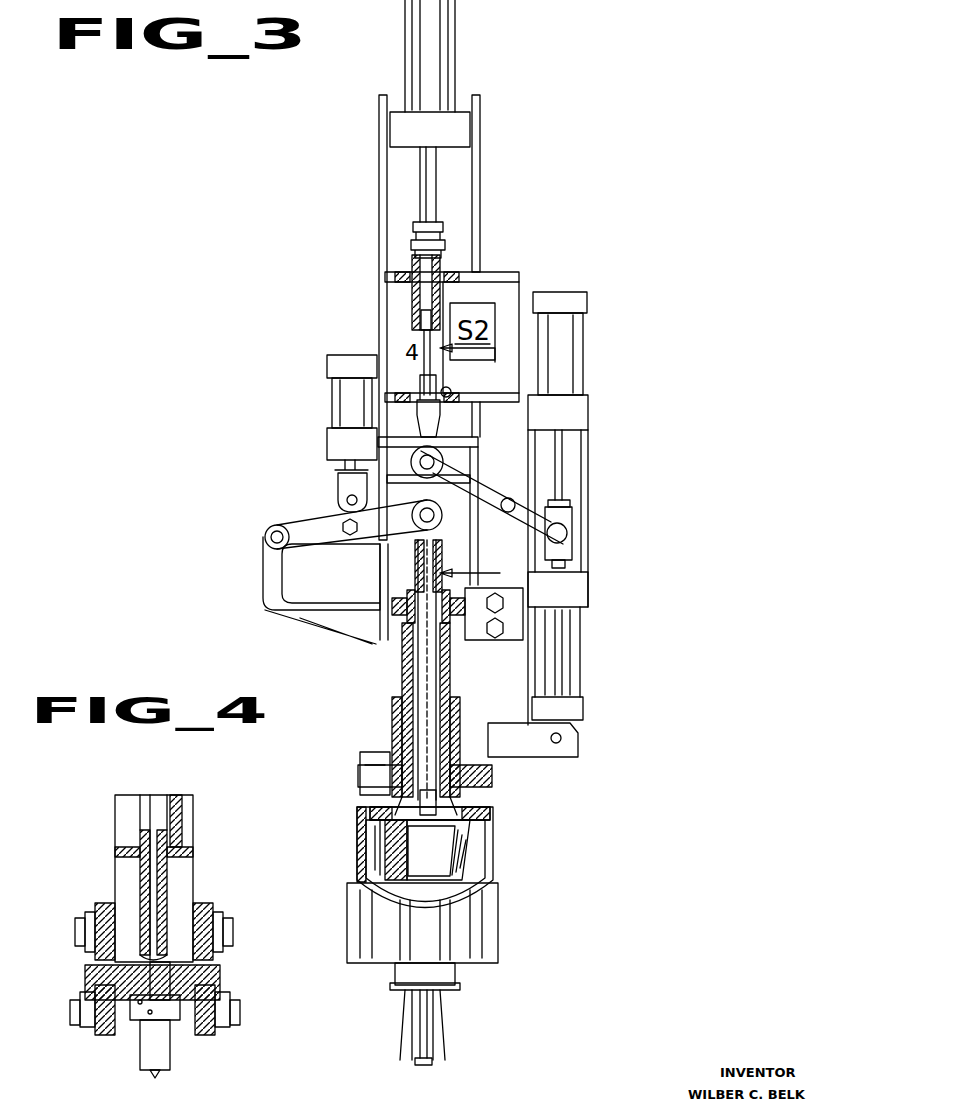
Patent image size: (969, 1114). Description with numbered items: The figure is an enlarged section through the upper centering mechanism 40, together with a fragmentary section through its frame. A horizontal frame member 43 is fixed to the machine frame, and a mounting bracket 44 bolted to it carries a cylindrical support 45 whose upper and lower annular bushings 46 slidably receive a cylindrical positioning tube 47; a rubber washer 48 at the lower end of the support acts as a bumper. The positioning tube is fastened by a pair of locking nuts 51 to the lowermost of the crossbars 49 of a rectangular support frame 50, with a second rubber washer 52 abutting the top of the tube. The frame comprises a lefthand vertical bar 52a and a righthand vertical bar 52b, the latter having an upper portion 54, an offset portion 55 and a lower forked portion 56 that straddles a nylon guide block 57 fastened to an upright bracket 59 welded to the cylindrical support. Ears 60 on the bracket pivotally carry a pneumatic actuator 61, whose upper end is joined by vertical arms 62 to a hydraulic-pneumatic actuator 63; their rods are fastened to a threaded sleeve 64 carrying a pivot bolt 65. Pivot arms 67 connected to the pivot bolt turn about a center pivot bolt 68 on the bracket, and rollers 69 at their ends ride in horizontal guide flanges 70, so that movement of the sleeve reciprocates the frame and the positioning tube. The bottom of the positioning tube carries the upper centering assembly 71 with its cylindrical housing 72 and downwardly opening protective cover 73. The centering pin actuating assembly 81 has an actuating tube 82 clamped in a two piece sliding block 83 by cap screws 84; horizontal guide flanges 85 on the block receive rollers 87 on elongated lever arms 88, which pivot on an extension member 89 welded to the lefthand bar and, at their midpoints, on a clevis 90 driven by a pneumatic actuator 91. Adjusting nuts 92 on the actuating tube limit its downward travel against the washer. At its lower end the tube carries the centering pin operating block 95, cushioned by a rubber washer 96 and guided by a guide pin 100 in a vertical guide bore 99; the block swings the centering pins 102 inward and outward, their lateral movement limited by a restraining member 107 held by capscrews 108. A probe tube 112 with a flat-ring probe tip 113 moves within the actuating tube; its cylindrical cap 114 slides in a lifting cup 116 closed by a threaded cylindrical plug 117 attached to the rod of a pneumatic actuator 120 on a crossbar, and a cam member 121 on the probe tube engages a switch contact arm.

In FIG. 3, the upper centering mechanism 40 is at (615, 188).
In FIG. 3, the horizontal frame member 43 is at (492, 778).
In FIG. 3, the mounting bracket 44 is at (358, 777).
In FIG. 3, the cylindrical support 45 is at (402, 700).
In FIG. 3, the annular bushings 46 is at (402, 718).
In FIG. 3, the cylindrical positioning tube 47 is at (410, 668).
In FIG. 3, the rubber washer 48 is at (470, 815).
In FIG. 3, the crossbars 49 is at (445, 130).
In FIG. 3, the rectangular support frame 50 is at (382, 350).
In FIG. 3, the locking nuts 51 is at (395, 618).
In FIG. 3, the second rubber washer 52 is at (395, 582).
In FIG. 3, the lefthand vertical bar 52a is at (378, 178).
In FIG. 4, the lefthand vertical bar 52a is at (188, 868).
In FIG. 3, the righthand vertical bar 52b is at (474, 190).
In FIG. 3, the upper portion 54 is at (478, 160).
In FIG. 3, the offset portion 55 is at (519, 278).
In FIG. 3, the lower forked portion 56 is at (560, 597).
In FIG. 3, the nylon guide block 57 is at (512, 640).
In FIG. 3, the upright bracket 59 is at (560, 697).
In FIG. 3, the ears 60 is at (562, 745).
In FIG. 3, the pneumatic actuator 61 is at (565, 675).
In FIG. 3, the vertical arms 62 is at (590, 420).
In FIG. 3, the hydraulic-pneumatic actuator 63 is at (587, 335).
In FIG. 3, the threaded sleeve 64 is at (555, 555).
In FIG. 3, the pivot bolt 65 is at (568, 535).
In FIG. 3, the pivot arms 67 is at (550, 530).
In FIG. 4, the pivot arms 67 is at (85, 940).
In FIG. 3, the center pivot bolt 68 is at (560, 510).
In FIG. 3, the rollers 69 is at (420, 462).
In FIG. 4, the rollers 69 is at (90, 925).
In FIG. 3, the horizontal guide flanges 70 is at (400, 455).
In FIG. 4, the horizontal guide flanges 70 is at (95, 906).
In FIG. 3, the upper centering assembly 71 is at (512, 894).
In FIG. 3, the cylindrical housing 72 is at (362, 830).
In FIG. 3, the protective cover 73 is at (497, 915).
In FIG. 3, the centering pin actuating assembly 81 is at (272, 518).
In FIG. 3, the actuating tube 82 is at (370, 760).
In FIG. 4, the actuating tube 82 is at (160, 1062).
In FIG. 3, the two piece sliding block 83 is at (395, 552).
In FIG. 4, the two piece sliding block 83 is at (205, 978).
In FIG. 3, the cap screws 84 is at (455, 483).
In FIG. 4, the cap screws 84 is at (110, 975).
In FIG. 4, the horizontal guide flanges 85 is at (90, 1040).
In FIG. 4, the rollers 87 is at (85, 992).
In FIG. 3, the elongated lever arms 88 is at (300, 555).
In FIG. 4, the elongated lever arms 88 is at (215, 1000).
In FIG. 3, the extension member 89 is at (285, 603).
In FIG. 3, the clevis 90 is at (337, 495).
In FIG. 3, the pneumatic actuator 91 is at (330, 388).
In FIG. 4, the adjusting nuts 92 is at (140, 1005).
In FIG. 3, the centering pin operating block 95 is at (462, 850).
In FIG. 3, the rubber washer 96 is at (362, 808).
In FIG. 3, the vertical guide bore 99 is at (378, 855).
In FIG. 3, the guide pin 100 is at (380, 872).
In FIG. 3, the centering fingers or pins 102 is at (430, 1005).
In FIG. 3, the restraining member 107 is at (398, 1000).
In FIG. 3, the capscrews 108 is at (470, 965).
In FIG. 3, the probe tube 112 is at (424, 340).
In FIG. 4, the probe tube 112 is at (157, 793).
In FIG. 3, the probe tip 113 is at (405, 1065).
In FIG. 3, the cylindrical cap 114 is at (418, 312).
In FIG. 3, the lifting cup 116 is at (412, 282).
In FIG. 3, the threaded cylindrical plug 117 is at (412, 256).
In FIG. 3, the pneumatic actuator 120 is at (455, 30).
In FIG. 3, the cam member 121 is at (440, 400).
In FIG. 4, the cam member 121 is at (130, 855).